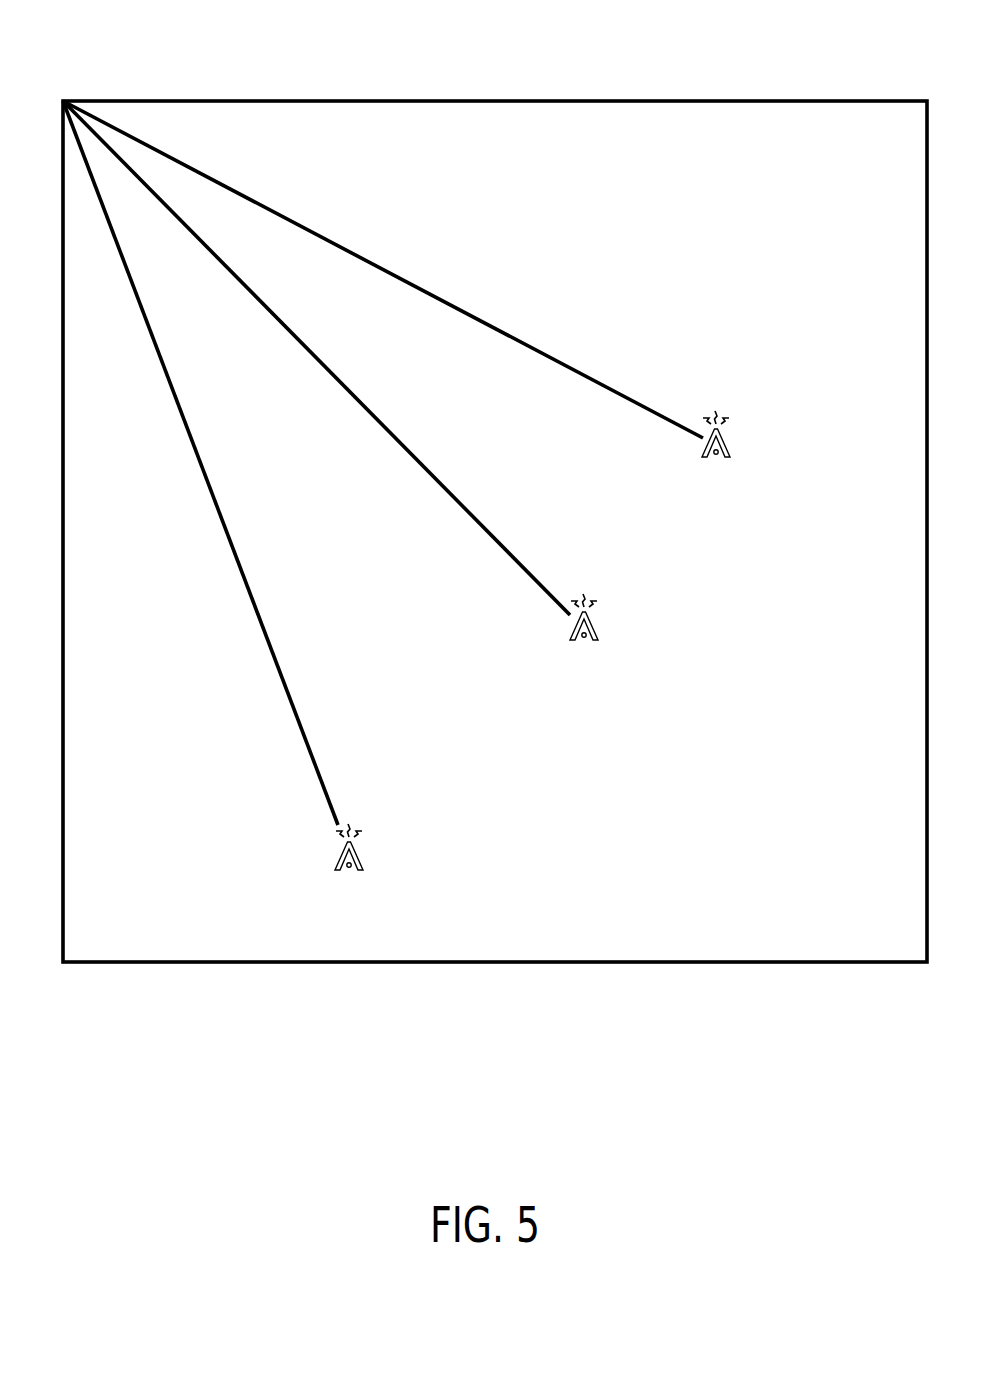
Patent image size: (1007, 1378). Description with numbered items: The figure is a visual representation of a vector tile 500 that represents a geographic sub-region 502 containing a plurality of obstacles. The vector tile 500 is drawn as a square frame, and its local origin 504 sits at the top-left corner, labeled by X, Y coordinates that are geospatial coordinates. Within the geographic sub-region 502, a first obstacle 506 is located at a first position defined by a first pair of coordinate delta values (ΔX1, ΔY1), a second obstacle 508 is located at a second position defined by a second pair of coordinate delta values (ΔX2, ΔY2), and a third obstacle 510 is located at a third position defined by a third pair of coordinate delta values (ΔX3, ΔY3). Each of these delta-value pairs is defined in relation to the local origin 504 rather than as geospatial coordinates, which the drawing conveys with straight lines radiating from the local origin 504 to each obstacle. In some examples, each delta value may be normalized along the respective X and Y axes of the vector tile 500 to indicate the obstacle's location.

The vector tile 500 is at (851, 101).
The geographic sub-region 502 is at (546, 171).
The local origin 504 is at (146, 41).
The first obstacle 506 is at (764, 431).
The second obstacle 508 is at (632, 609).
The third obstacle 510 is at (397, 844).